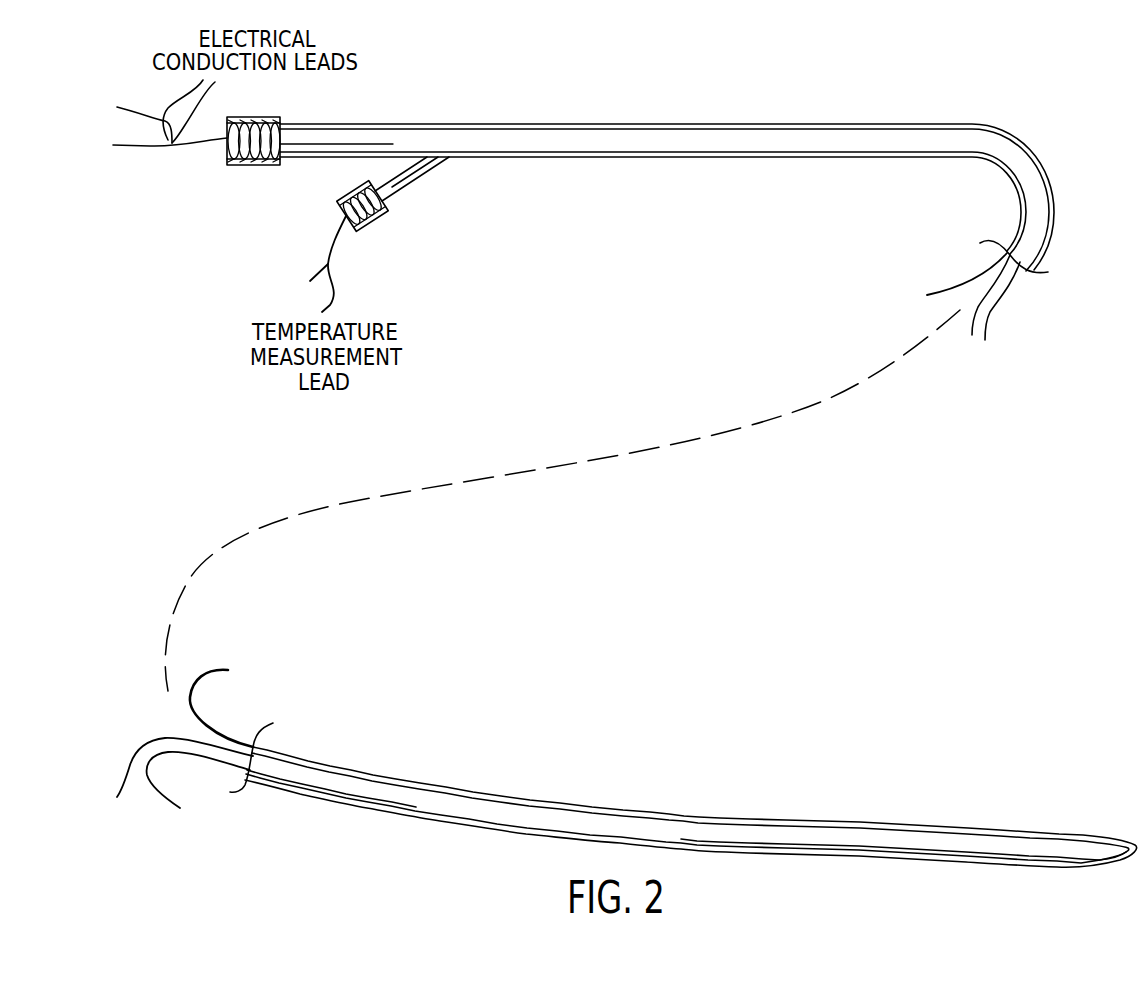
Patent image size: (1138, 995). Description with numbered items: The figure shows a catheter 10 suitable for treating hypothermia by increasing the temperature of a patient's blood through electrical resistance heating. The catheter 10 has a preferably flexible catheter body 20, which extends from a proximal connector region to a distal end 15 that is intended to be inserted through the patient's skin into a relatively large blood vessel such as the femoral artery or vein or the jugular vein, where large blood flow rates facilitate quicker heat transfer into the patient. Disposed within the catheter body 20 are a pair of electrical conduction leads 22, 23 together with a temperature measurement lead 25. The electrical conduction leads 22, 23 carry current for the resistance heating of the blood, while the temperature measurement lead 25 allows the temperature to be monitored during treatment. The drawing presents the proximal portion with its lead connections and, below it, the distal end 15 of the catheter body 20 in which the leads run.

The catheter 10 is at (1050, 185).
The distal end 15 is at (908, 822).
The catheter body 20 is at (403, 780).
The electrical conduction lead 22 is at (129, 780).
The electrical conduction lead 23 is at (160, 793).
The temperature measurement lead 25 is at (217, 730).